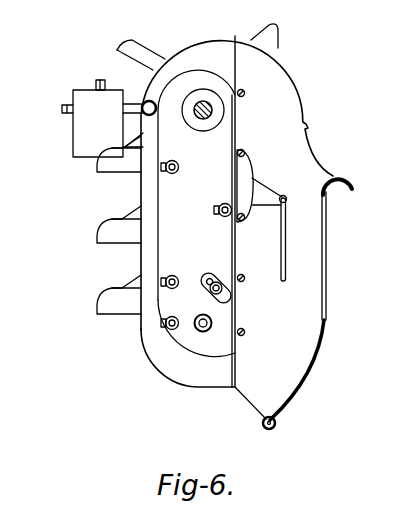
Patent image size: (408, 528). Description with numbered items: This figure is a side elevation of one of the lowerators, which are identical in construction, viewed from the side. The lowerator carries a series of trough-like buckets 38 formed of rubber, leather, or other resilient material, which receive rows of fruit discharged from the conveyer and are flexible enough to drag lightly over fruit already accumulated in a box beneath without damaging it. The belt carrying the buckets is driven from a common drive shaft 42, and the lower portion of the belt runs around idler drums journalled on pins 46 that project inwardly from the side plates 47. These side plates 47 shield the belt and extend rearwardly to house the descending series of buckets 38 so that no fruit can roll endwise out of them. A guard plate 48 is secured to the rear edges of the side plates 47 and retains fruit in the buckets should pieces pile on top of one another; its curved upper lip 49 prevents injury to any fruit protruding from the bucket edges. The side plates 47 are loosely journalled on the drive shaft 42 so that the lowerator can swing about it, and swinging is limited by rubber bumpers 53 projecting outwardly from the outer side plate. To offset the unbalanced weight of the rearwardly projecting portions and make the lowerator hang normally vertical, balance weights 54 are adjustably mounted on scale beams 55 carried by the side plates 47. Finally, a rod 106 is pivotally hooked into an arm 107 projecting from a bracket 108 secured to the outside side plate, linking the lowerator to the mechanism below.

The buckets 38 is at (108, 224).
The drive shaft 42 is at (209, 103).
The pins 46 is at (198, 328).
The side plates 47 is at (203, 377).
The guard plate 48 is at (328, 268).
The curved upper lip 49 is at (340, 177).
The rubber bumpers 53 is at (144, 102).
The balance weights 54 is at (88, 100).
The scale beams 55 is at (62, 108).
The rods 106 is at (287, 238).
The arms 107 is at (245, 163).
The brackets 108 is at (263, 190).